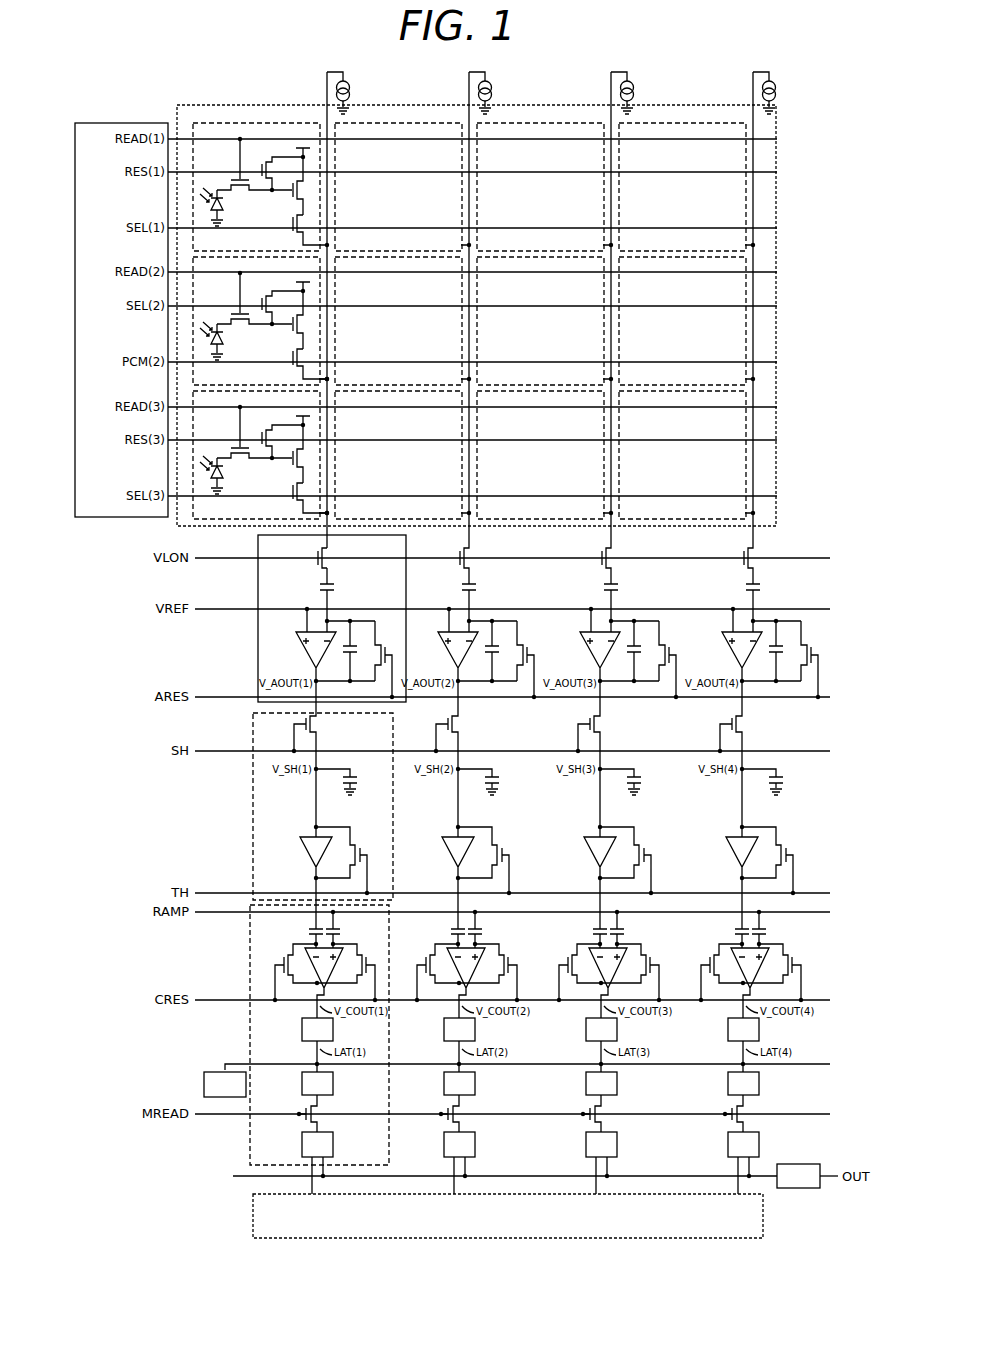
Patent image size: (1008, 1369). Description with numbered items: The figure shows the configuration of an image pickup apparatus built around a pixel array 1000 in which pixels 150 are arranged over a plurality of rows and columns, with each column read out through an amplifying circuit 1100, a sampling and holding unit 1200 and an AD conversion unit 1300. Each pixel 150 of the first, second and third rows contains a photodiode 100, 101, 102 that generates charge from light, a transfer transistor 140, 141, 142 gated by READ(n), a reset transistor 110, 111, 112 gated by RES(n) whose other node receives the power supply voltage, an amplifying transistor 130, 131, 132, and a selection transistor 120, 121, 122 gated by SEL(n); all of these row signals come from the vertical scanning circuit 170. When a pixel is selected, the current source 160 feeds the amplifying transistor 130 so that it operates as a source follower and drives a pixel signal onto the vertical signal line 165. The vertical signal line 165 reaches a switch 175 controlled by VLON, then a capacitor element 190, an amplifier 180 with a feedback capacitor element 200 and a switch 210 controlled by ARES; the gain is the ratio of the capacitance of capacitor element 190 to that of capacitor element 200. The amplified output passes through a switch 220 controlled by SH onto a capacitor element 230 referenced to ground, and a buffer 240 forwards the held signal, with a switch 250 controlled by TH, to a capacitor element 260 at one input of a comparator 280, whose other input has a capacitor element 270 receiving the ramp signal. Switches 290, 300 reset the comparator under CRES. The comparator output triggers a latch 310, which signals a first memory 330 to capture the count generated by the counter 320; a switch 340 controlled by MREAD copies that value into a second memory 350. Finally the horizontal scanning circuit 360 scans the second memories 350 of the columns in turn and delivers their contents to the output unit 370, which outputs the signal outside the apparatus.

The photodiode 100 is at (221, 214).
The photodiode 101 is at (225, 341).
The photodiode 102 is at (225, 475).
The reset transistor 110 is at (261, 168).
The reset transistor 111 is at (278, 302).
The reset transistor 112 is at (278, 436).
The selection transistor 120 is at (291, 226).
The selection transistor 121 is at (295, 364).
The selection transistor 122 is at (295, 498).
The amplifying transistor 130 is at (291, 194).
The amplifying transistor 131 is at (281, 320).
The amplifying transistor 132 is at (281, 454).
The transfer transistor 140 is at (240, 191).
The transfer transistor 141 is at (244, 307).
The transfer transistor 142 is at (244, 441).
The pixel 150 is at (231, 124).
The current source 160 is at (348, 85).
The vertical signal line 165 is at (326, 78).
The vertical scanning circuit 170 is at (75, 384).
The switch 175 is at (317, 557).
The amplifier 180 is at (297, 636).
The capacitor element 190 is at (320, 589).
The capacitor element 200 is at (352, 648).
The switch 210 is at (384, 652).
The switch 220 is at (322, 726).
The capacitor element 230 is at (358, 778).
The buffer 240 is at (300, 840).
The switch 250 is at (362, 849).
The capacitor element 260 is at (309, 931).
The capacitor element 270 is at (340, 931).
The comparator 280 is at (320, 968).
The switch 290 is at (282, 958).
The switch 300 is at (365, 958).
The latch 310 is at (317, 1045).
The counter 320 is at (225, 1084).
The first memory 330 is at (317, 1083).
The switch 340 is at (320, 1111).
The second memory 350 is at (317, 1163).
The horizontal scanning circuit 360 is at (416, 1239).
The output unit 370 is at (807, 1176).
The pixel array 1000 is at (202, 105).
The amplifying circuit 1100 is at (258, 604).
The sampling and holding unit 1200 is at (253, 795).
The AD conversion unit 1300 is at (250, 937).